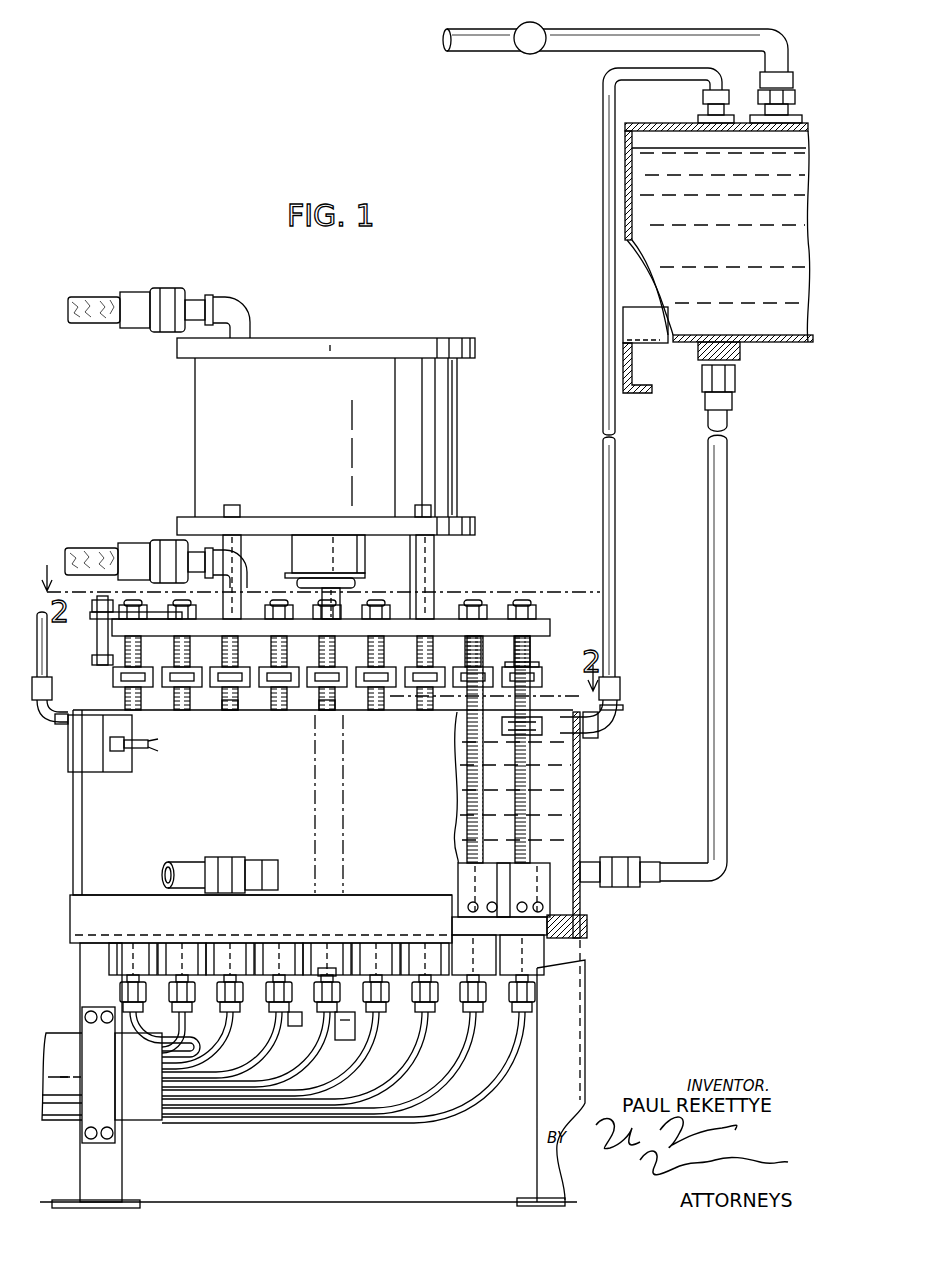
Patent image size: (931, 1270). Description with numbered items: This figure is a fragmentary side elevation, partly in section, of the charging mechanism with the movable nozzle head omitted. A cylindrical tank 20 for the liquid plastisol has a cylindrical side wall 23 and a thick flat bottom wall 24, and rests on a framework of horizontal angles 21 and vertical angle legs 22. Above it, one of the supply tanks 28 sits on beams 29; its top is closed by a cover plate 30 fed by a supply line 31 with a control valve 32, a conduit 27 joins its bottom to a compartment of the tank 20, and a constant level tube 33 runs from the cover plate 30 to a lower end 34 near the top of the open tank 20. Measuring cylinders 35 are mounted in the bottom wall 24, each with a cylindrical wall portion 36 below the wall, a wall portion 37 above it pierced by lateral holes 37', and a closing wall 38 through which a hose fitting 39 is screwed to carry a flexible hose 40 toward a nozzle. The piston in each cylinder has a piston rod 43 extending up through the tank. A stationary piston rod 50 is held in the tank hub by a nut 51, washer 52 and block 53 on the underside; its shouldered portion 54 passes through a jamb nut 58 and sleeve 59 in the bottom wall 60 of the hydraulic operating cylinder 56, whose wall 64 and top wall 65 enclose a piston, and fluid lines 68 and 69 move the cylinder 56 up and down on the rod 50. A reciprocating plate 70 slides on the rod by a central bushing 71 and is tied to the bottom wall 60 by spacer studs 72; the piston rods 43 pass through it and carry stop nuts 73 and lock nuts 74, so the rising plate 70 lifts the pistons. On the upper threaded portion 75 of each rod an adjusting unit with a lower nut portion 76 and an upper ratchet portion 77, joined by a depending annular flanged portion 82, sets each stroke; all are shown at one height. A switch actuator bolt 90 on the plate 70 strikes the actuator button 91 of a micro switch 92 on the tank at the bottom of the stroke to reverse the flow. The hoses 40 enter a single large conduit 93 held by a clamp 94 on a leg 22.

The tank 20 is at (595, 810).
The horizontal angles 21 is at (366, 905).
The vertical angle legs 22 is at (570, 1035).
The cylindrical side wall 23 is at (581, 772).
The bottom wall 24 is at (585, 932).
The conduits 27 is at (728, 625).
The supply tanks 28 is at (626, 188).
The beams 29 is at (637, 393).
The cover plate 30 is at (668, 124).
The supply line 31 is at (458, 50).
The control valve 32 is at (538, 54).
The constant level tube 33 is at (616, 500).
The lower end 34 is at (590, 738).
The measuring cylinders 35 is at (452, 878).
The cylindrical wall portion 36 is at (133, 952).
The wall portion 37 is at (499, 873).
The lateral holes 37' is at (524, 893).
The wall 38 is at (155, 976).
The hose fitting 39 is at (121, 992).
The flexible hose 40 is at (262, 1088).
The piston rod 43 is at (468, 781).
The stationary piston rod 50 is at (346, 836).
The nut 51 is at (352, 1026).
The washer 52 is at (292, 1018).
The block 53 is at (326, 974).
The shouldered portion 54 is at (322, 706).
The hydraulic operating cylinder 56 is at (468, 425).
The jamb nut 58 is at (356, 584).
The sleeve 59 is at (366, 553).
The bottom wall 60 is at (476, 527).
The wall 64 is at (200, 435).
The top wall 65 is at (458, 338).
The fluid line 68 is at (112, 295).
The fluid line 69 is at (95, 546).
The reciprocating head or plate 70 is at (548, 627).
The central bushing 71 is at (340, 576).
The spacer studs 72 is at (240, 590).
The stop nuts 73 is at (490, 617).
The lock nuts 74 is at (532, 600).
The upper threaded portion 75 is at (531, 652).
The lower nut portion 76 is at (543, 683).
The upper ratchet portion 77 is at (538, 668).
The depending annular flanged portion 82 is at (238, 704).
The adjustable switch actuator bolt 90 is at (99, 650).
The actuator button 91 is at (100, 714).
The micro switch 92 is at (115, 760).
The conduit 93 is at (150, 1120).
The clamp 94 is at (108, 1090).